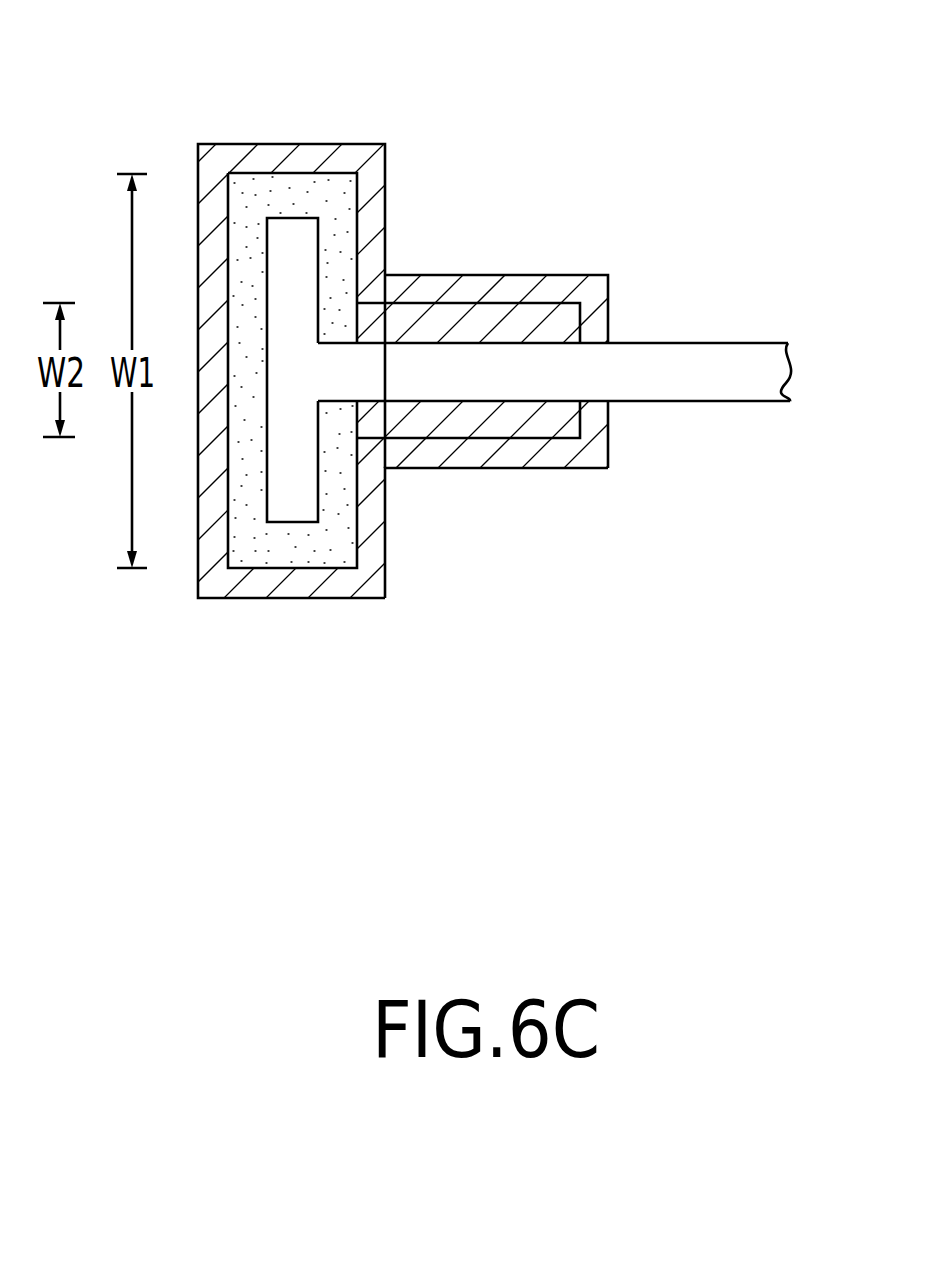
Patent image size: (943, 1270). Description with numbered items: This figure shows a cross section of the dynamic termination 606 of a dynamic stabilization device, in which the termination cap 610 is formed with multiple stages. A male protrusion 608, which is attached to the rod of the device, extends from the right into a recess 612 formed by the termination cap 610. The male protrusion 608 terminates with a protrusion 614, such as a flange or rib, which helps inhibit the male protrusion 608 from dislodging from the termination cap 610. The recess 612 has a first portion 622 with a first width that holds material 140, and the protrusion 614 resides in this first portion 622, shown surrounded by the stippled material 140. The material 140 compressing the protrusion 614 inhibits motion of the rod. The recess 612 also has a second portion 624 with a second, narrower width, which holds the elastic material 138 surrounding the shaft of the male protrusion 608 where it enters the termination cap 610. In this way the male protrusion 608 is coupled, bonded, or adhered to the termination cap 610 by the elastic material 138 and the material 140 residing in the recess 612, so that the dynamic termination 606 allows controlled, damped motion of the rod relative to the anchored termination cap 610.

The dynamic termination 606 is at (791, 138).
The termination cap 610 is at (360, 143).
The recess 612 is at (431, 546).
The protrusion 614 is at (288, 512).
The first portion 622 is at (345, 247).
The second portion 624 is at (552, 322).
The elastic material 138 is at (550, 432).
The male protrusion 608 is at (660, 373).
The material 140 is at (332, 543).